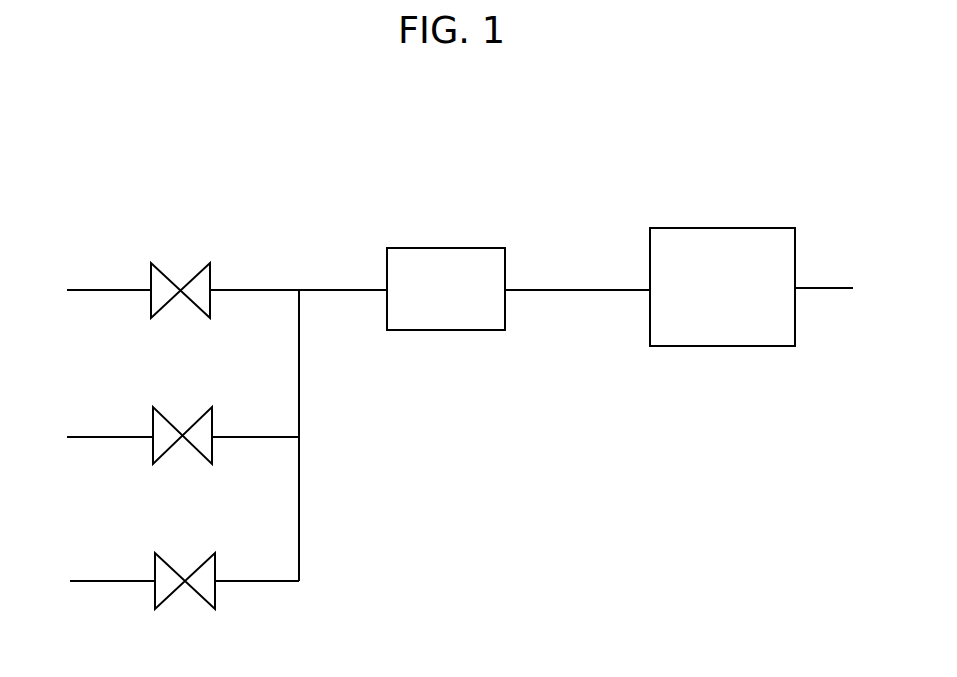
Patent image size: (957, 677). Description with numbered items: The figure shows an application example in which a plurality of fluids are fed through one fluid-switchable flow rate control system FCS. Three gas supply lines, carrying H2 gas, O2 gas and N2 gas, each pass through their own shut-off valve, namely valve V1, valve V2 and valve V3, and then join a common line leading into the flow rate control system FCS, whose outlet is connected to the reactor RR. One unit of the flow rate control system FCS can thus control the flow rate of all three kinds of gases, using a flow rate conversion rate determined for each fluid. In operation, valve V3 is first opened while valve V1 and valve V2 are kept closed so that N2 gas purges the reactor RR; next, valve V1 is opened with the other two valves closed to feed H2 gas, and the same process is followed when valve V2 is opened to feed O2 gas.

The valve V1 is at (200, 265).
The valve V2 is at (203, 418).
The valve V3 is at (206, 562).
The fluid-switchable flow rate control system FCS is at (446, 289).
The reactor RR is at (722, 287).
The H2 gas H2 is at (93, 295).
The O2 gas O2 is at (93, 441).
The N2 gas N2 is at (95, 585).